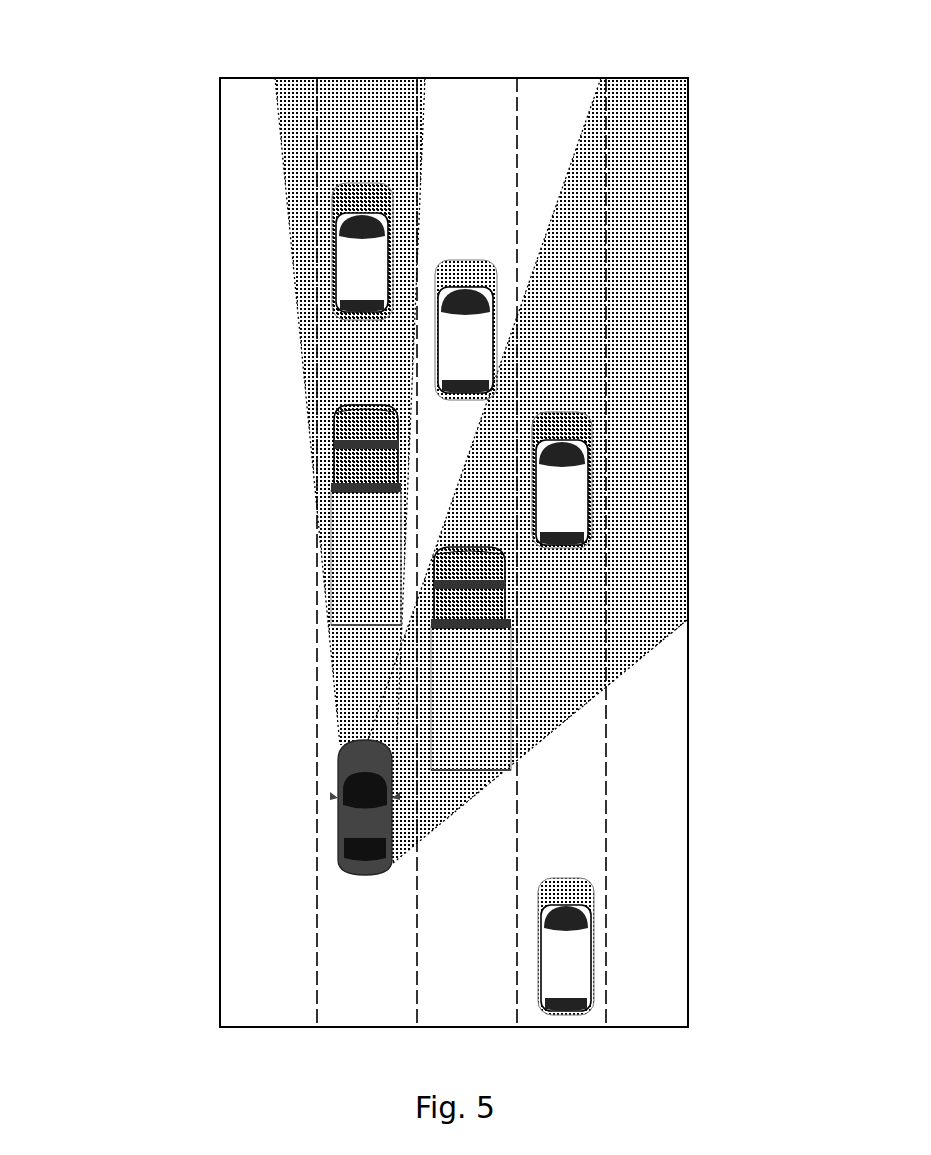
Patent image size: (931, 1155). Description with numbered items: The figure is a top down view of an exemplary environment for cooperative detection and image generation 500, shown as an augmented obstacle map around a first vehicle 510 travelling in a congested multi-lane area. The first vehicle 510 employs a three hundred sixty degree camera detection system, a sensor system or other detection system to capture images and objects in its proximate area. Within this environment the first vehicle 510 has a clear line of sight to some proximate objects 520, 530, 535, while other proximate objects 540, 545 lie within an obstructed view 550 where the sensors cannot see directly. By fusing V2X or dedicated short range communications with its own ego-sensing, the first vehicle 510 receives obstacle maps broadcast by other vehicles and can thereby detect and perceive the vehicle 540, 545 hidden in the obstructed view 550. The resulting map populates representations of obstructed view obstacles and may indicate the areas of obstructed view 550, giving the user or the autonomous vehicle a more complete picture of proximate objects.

The exemplary environment for cooperative detection and image generation 500 is at (508, 37).
The first vehicle 510 is at (328, 807).
The proximate object 520 is at (425, 690).
The proximate object 530 is at (602, 947).
The proximate object 535 is at (505, 318).
The vehicle in obstructed view 540 is at (603, 480).
The vehicle in obstructed view 545 is at (322, 238).
The obstructed view 550 is at (395, 140).